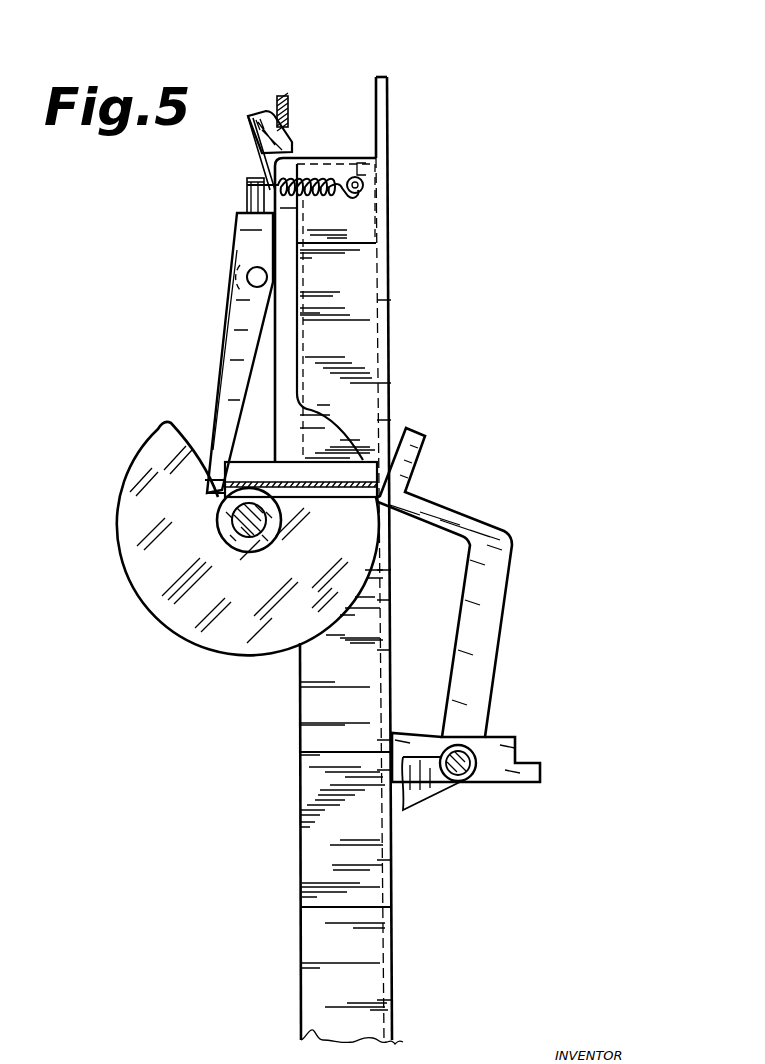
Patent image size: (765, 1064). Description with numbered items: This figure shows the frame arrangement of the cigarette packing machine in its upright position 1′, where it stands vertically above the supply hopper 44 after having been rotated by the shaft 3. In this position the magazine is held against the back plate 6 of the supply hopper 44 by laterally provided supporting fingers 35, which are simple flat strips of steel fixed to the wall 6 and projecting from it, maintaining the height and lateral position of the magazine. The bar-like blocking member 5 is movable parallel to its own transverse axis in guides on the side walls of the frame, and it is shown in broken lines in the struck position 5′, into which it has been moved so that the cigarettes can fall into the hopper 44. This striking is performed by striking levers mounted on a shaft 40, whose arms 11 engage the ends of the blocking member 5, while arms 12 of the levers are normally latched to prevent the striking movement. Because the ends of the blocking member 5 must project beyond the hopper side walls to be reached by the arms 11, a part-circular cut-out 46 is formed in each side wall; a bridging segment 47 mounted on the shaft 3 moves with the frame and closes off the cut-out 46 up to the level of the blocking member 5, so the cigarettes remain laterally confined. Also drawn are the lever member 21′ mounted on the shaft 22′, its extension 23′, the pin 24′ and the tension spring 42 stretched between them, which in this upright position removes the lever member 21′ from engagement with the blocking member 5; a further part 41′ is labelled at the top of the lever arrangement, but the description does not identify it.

The frame arrangement in upright position 1′ is at (272, 167).
The shaft 3 is at (238, 530).
The blocking member 5 is at (345, 478).
The struck position of blocking member 5′ is at (220, 495).
The back plate 6 is at (387, 88).
The striking lever arm 11 is at (495, 578).
The striking lever arm 12 is at (500, 748).
The lever member 21′ is at (235, 330).
The shaft 22′ is at (247, 276).
The extension 23′ is at (245, 200).
The pin 24′ is at (362, 188).
The supporting finger 35 is at (373, 168).
The shaft 40 is at (460, 775).
The bolt 41′ is at (258, 116).
The tension spring 42 is at (318, 177).
The supply hopper 44 is at (325, 712).
The part-circular cut-out 46 is at (330, 440).
The bridging segment 47 is at (135, 522).